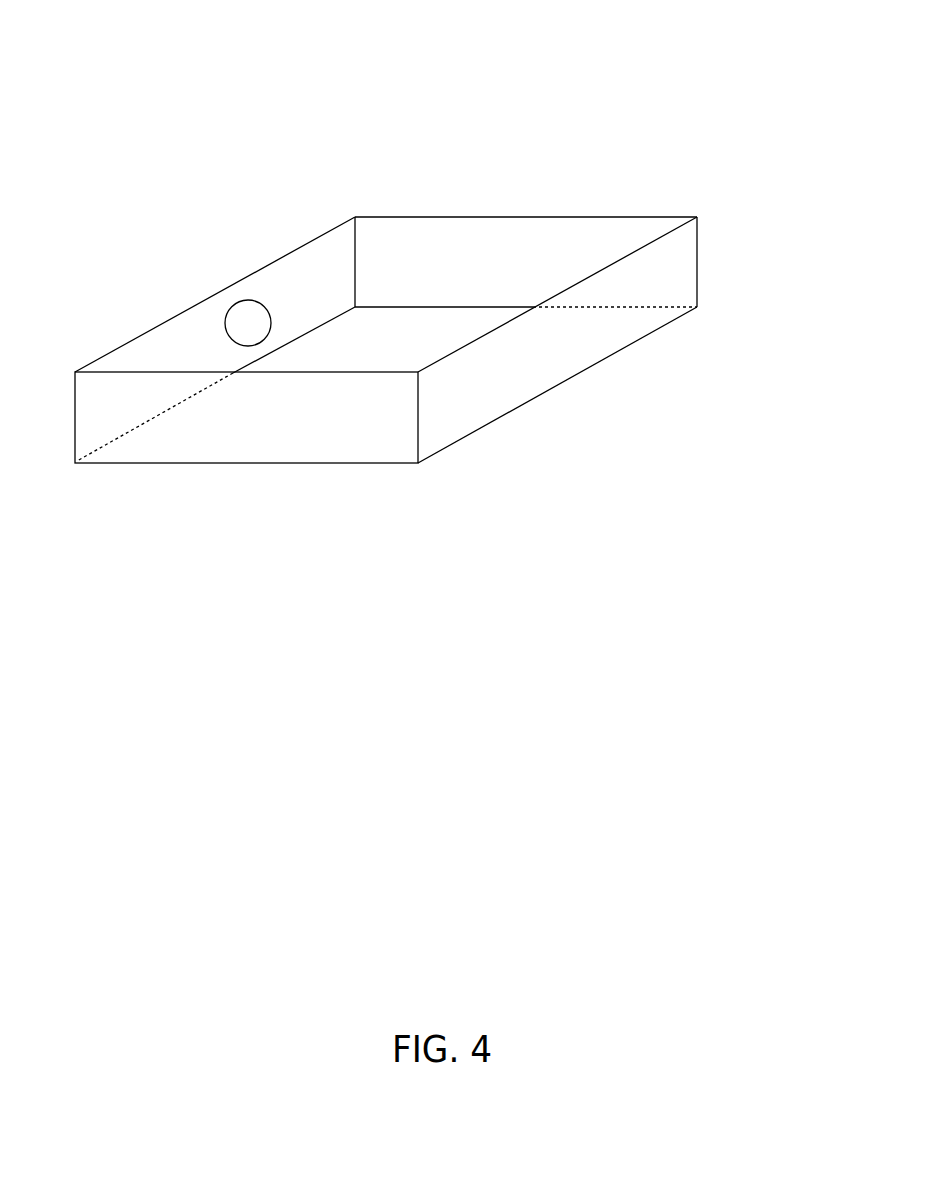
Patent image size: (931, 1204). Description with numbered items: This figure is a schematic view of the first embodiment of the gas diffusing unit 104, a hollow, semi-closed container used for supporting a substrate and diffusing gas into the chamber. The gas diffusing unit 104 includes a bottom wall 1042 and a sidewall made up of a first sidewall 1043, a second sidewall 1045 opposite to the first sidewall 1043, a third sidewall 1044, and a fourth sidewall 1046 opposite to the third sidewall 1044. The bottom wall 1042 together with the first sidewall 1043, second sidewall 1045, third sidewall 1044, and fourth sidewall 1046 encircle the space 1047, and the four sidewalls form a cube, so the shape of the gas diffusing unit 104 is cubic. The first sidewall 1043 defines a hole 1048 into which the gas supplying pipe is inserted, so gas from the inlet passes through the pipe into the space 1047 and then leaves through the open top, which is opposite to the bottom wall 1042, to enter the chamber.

The gas diffusing unit 104 is at (517, 55).
The bottom wall 1042 is at (573, 377).
The first sidewall 1043 is at (293, 282).
The third sidewall 1044 is at (260, 420).
The second sidewall 1045 is at (492, 387).
The fourth sidewall 1046 is at (552, 247).
The space 1047 is at (579, 254).
The hole 1048 is at (250, 325).